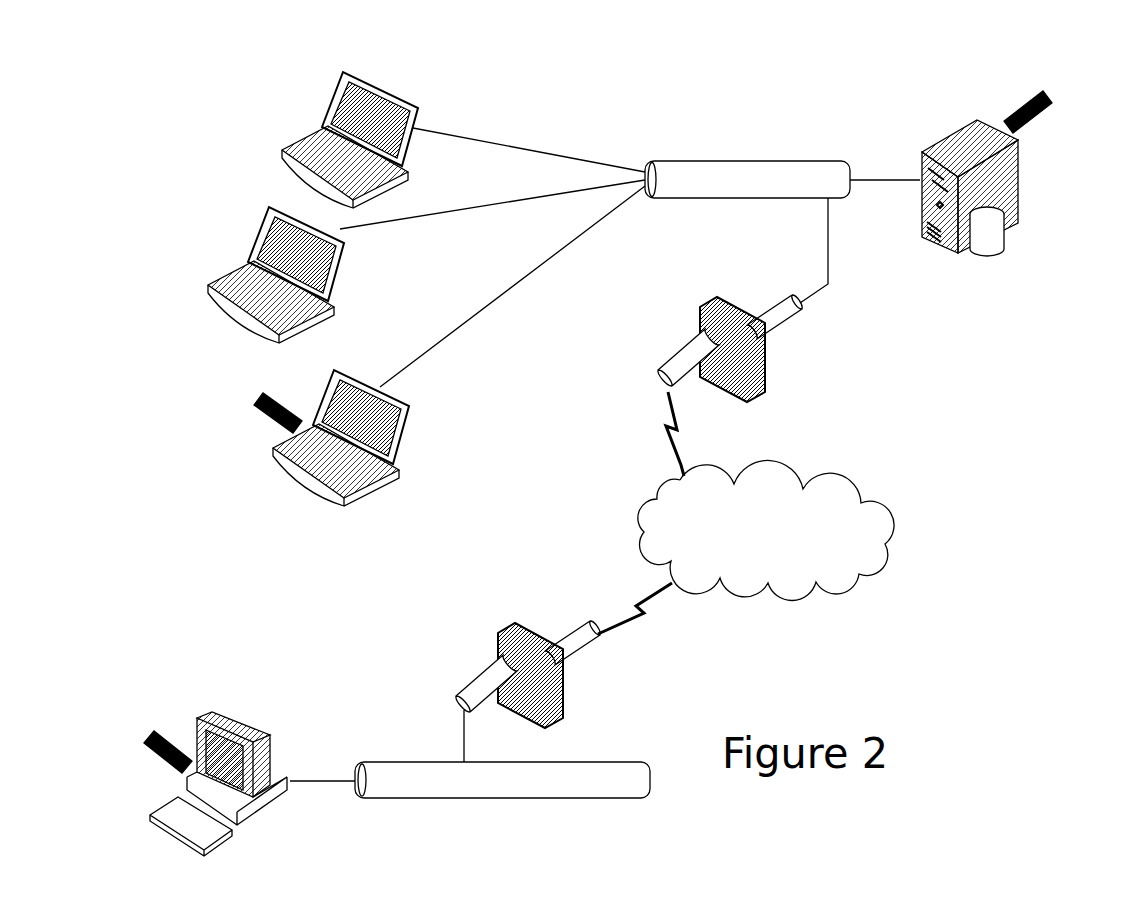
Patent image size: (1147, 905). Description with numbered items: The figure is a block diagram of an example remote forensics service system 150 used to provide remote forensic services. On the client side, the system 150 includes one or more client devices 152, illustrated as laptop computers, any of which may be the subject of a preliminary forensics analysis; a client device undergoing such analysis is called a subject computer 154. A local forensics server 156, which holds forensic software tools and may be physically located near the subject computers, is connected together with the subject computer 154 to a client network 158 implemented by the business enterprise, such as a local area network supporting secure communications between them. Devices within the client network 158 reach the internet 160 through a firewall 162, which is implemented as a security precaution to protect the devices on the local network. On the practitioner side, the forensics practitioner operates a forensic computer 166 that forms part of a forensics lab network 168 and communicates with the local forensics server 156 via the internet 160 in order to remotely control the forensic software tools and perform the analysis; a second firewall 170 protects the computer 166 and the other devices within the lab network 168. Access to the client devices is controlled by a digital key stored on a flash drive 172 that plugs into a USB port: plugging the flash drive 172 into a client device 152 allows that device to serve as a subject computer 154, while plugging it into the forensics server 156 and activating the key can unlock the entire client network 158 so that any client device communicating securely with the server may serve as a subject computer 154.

The remote forensics service system 150 is at (946, 56).
The client device 152 is at (418, 104).
The subject computer 154 is at (420, 414).
The forensics server 156 is at (1025, 184).
The client network 158 is at (724, 160).
The internet 160 is at (784, 467).
The firewall 162 is at (772, 370).
The forensic computer 166 is at (256, 719).
The forensics lab network 168 is at (598, 762).
The firewall 170 is at (516, 624).
The flash drive 172 is at (256, 424).